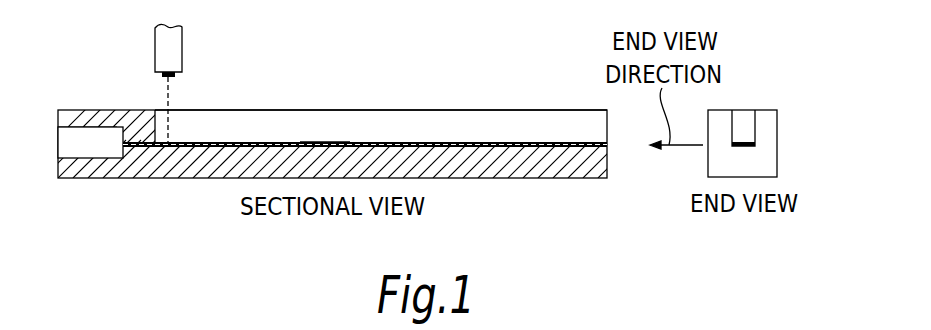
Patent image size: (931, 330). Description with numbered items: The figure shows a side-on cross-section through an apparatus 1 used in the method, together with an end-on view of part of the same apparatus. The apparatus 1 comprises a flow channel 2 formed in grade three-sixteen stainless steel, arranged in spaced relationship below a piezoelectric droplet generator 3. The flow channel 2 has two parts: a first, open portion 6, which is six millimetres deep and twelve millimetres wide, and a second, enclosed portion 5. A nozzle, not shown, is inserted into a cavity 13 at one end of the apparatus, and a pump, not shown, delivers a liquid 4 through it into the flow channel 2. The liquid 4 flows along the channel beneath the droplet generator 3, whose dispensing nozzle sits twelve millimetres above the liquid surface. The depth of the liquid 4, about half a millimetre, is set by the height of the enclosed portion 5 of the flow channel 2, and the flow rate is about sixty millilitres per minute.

The apparatus 1 is at (195, 181).
The flow channel 2 is at (388, 120).
The piezoelectric droplet generator 3 is at (177, 42).
The liquid 4 is at (522, 147).
The enclosed portion 5 is at (147, 147).
The open portion 6 is at (323, 142).
The cavity 13 is at (88, 135).